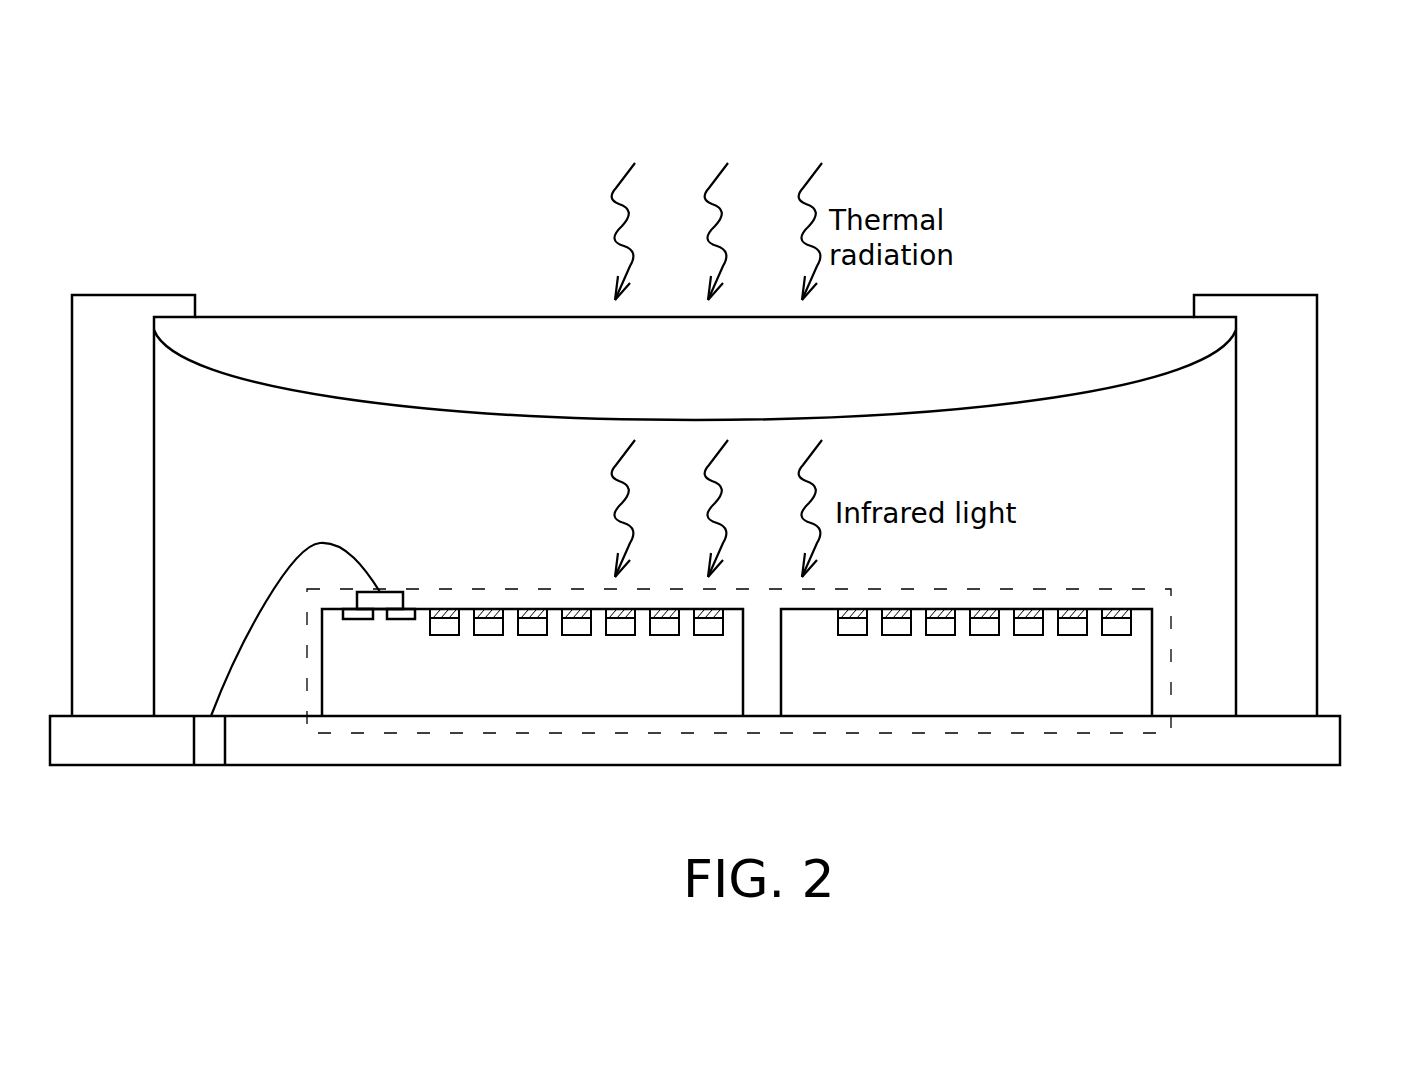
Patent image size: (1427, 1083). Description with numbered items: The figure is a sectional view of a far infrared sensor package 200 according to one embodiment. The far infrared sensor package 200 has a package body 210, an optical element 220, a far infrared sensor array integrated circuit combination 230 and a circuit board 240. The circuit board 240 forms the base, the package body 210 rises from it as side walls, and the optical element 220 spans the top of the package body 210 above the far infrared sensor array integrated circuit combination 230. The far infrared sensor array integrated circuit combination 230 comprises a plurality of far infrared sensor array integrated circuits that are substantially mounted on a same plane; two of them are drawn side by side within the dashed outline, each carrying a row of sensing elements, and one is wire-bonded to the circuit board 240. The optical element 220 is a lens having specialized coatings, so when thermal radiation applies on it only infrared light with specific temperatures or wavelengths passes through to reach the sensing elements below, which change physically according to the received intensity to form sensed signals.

The far infrared sensor package 200 is at (1123, 112).
The package body 210 is at (1294, 511).
The optical element 220 is at (1026, 404).
The far infrared sensor array integrated circuit combination 230 is at (1120, 589).
The circuit board 240 is at (1316, 742).